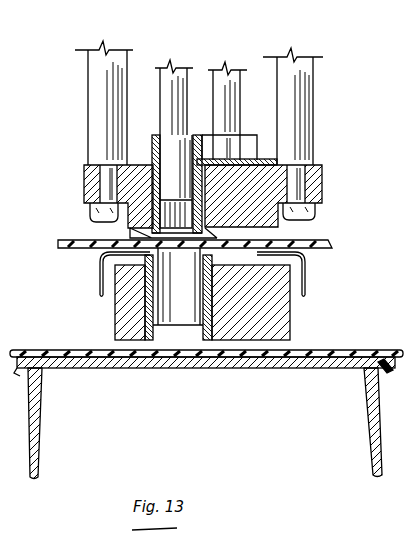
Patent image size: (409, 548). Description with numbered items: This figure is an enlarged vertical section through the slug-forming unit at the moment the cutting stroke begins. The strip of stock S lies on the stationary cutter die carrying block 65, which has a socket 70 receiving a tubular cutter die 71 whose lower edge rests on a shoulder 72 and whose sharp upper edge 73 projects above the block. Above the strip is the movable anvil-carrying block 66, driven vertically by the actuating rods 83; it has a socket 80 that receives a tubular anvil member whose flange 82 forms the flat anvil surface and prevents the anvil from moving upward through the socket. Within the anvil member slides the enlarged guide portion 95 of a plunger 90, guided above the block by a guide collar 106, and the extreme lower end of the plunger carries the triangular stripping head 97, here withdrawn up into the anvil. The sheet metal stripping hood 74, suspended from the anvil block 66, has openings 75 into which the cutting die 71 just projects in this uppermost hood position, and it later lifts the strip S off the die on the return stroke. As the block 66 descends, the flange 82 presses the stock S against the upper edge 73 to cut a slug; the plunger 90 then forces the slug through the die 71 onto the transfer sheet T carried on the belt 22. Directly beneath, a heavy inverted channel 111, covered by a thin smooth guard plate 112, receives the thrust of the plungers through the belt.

The plunger 90 is at (215, 90).
The actuating rods 83 is at (312, 90).
The enlarged guide portion 95 is at (156, 130).
The guide collars 106 is at (238, 133).
The anvil-carrying block 66 is at (322, 166).
The sockets 80 is at (160, 158).
The stripping head 97 is at (167, 212).
The flange 82 is at (132, 235).
The strip of stock S is at (330, 237).
The openings 75 is at (100, 263).
The stripping hood 74 is at (308, 276).
The cutter die carrying block 65 is at (115, 305).
The sockets 70 is at (142, 312).
The tubular cutter die 71 is at (207, 293).
The shoulder 72 is at (207, 327).
The upper edge 73 is at (198, 250).
The transfer sheet T is at (360, 347).
The inverted channel 111 is at (90, 371).
The guard plate 112 is at (18, 373).
The belt 22 is at (390, 372).